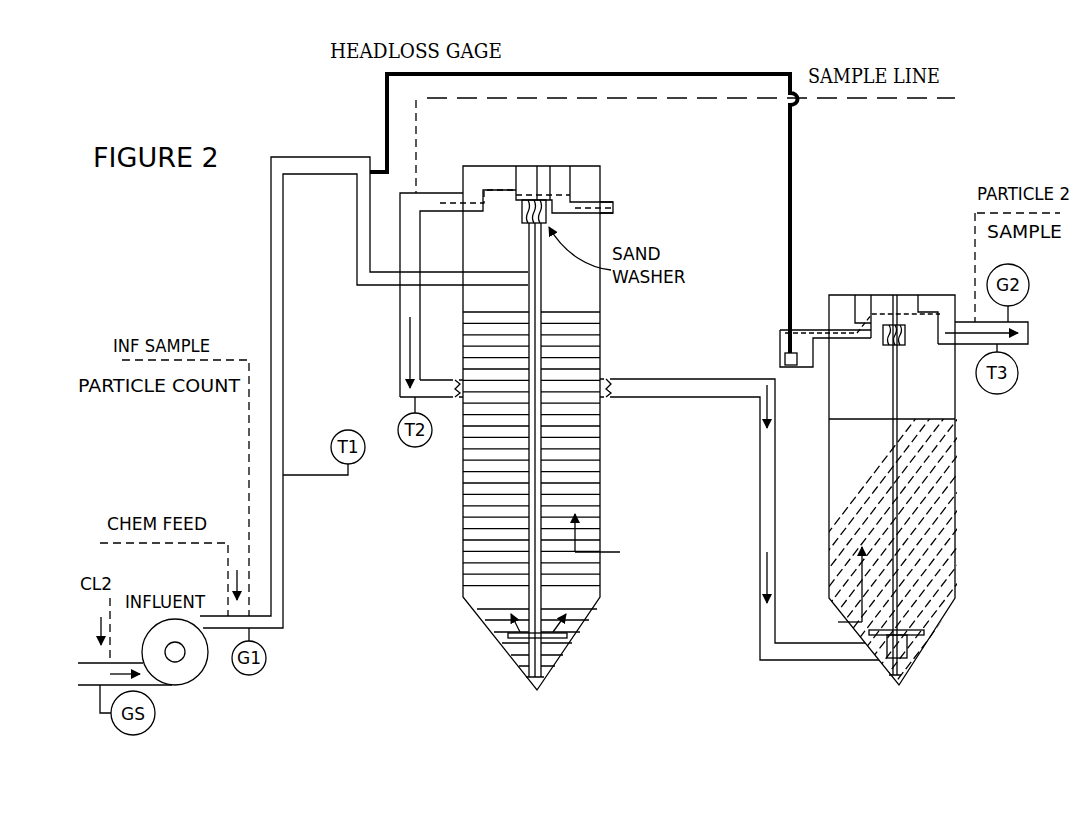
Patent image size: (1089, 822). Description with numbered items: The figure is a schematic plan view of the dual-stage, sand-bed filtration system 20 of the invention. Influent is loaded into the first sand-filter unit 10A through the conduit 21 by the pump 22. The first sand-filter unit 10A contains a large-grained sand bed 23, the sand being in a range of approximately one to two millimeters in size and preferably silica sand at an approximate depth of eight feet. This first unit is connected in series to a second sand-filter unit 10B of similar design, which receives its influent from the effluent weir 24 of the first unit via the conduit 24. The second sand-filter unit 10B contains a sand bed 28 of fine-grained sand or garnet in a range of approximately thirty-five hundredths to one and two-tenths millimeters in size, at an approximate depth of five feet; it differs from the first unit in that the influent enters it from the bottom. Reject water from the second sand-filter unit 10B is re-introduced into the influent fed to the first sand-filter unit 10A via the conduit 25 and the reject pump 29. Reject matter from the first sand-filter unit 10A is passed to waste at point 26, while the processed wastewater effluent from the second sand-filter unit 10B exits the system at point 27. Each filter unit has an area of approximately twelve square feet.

The filtration system 20 is at (967, 161).
The conduit 21 is at (372, 286).
The pump 22 is at (197, 675).
The large-grained sand bed 23 is at (586, 343).
The effluent weir and conduit 24 is at (420, 247).
The conduit 25 is at (791, 278).
The waste point 26 is at (621, 196).
The effluent exit point 27 is at (1036, 325).
The sand bed 28 is at (957, 560).
The reject pump 29 is at (783, 360).
The first sand-filter unit 10A is at (600, 489).
The second sand-filter unit 10B is at (957, 470).